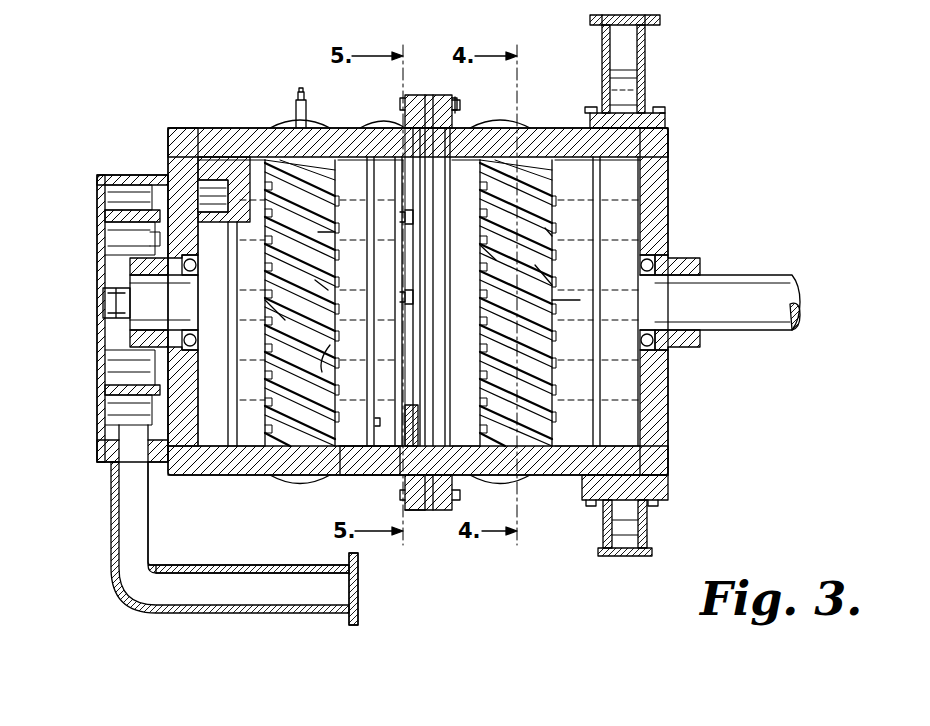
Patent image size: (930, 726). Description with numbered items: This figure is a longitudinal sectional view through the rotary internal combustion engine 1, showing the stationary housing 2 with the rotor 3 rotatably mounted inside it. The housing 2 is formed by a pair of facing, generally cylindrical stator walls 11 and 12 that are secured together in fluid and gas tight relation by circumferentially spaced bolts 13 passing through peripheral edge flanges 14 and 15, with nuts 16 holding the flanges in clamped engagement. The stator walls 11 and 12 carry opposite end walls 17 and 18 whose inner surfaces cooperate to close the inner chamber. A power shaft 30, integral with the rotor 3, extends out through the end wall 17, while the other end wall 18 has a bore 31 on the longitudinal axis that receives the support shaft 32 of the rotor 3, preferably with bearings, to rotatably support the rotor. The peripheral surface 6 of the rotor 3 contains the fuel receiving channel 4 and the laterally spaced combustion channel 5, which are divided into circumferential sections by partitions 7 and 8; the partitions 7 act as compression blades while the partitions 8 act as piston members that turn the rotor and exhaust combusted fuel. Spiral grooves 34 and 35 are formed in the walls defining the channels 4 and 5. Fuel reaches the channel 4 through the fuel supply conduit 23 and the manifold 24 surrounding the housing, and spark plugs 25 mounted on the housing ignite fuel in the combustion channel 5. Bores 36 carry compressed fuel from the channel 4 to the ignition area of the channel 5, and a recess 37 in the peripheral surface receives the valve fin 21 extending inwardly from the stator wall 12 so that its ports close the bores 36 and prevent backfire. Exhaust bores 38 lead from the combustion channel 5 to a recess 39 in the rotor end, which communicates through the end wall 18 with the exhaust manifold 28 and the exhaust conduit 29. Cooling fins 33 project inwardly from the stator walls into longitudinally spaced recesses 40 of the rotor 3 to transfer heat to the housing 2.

The rotary internal combustion engine 1 is at (198, 98).
The housing 2 is at (170, 126).
The rotor 3 is at (365, 158).
The fuel receiving channel 4 is at (528, 372).
The combustion channel 5 is at (305, 447).
The peripheral surface 6 is at (352, 447).
The partitions 7 is at (532, 278).
The partitions 8 is at (328, 368).
The stator wall 11 is at (578, 480).
The stator wall 12 is at (234, 478).
The bolts 13 is at (413, 98).
The peripheral edge flange 14 is at (445, 512).
The peripheral edge flange 15 is at (415, 512).
The nuts 16 is at (460, 110).
The end wall 17 is at (668, 188).
The end wall 18 is at (160, 240).
The valve fin 21 is at (405, 218).
The fuel supply conduit 23 is at (645, 45).
The manifold 24 is at (646, 100).
The spark plugs 25 is at (296, 108).
The manifold 28 is at (97, 365).
The exhaust conduit 29 is at (188, 565).
The power shaft 30 is at (735, 325).
The bore 31 is at (125, 320).
The support shaft 32 is at (140, 275).
The cooling fins 33 is at (366, 395).
The grooves 34 is at (552, 250).
The grooves 35 is at (338, 250).
The bores 36 is at (325, 290).
The recess 37 is at (405, 300).
The exhaust bores 38 is at (268, 298).
The recess 39 is at (212, 208).
The recesses 40 is at (578, 308).